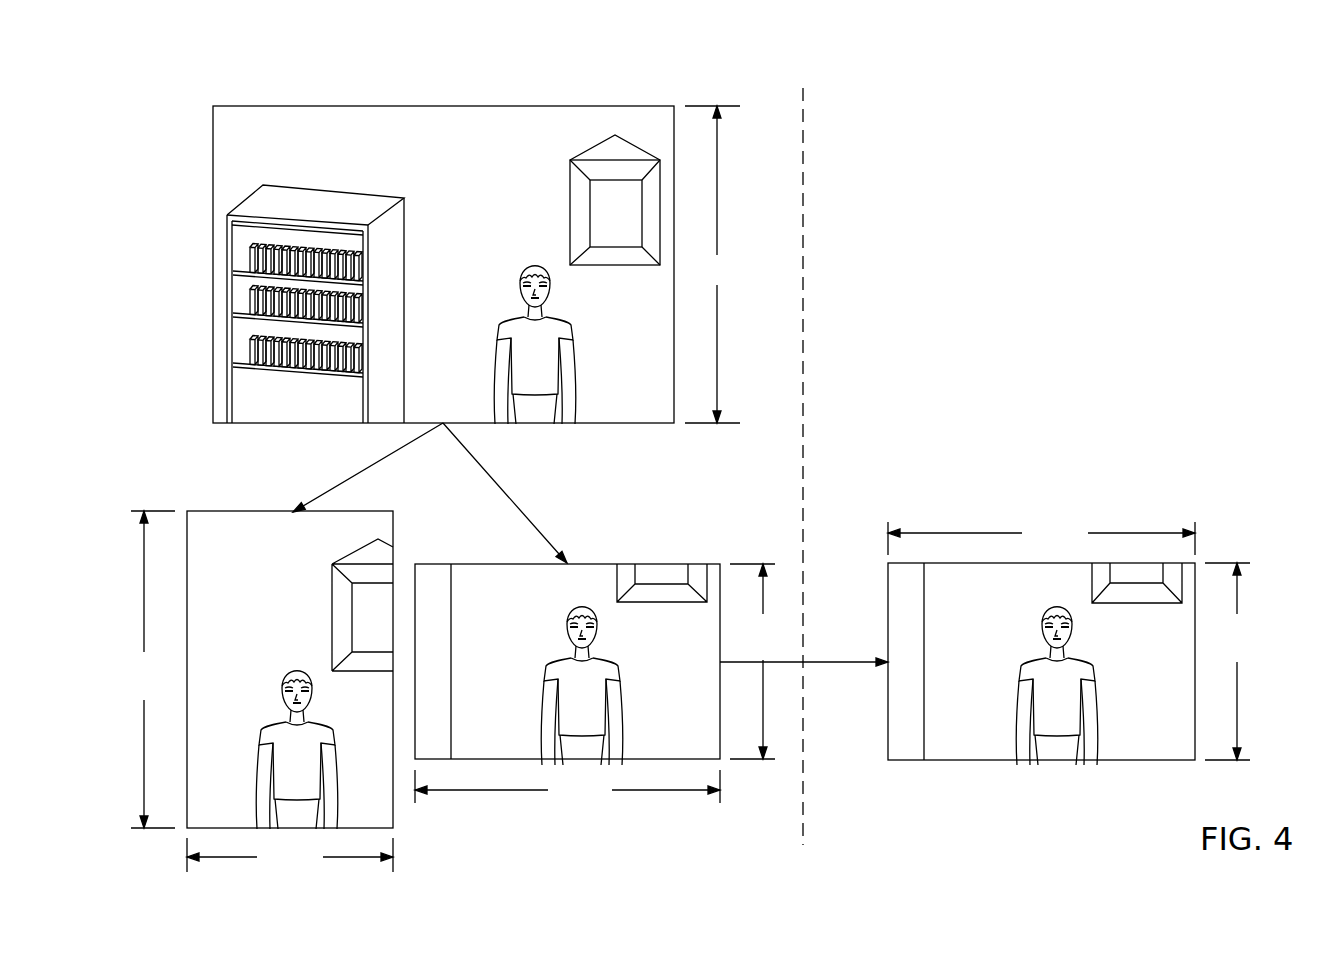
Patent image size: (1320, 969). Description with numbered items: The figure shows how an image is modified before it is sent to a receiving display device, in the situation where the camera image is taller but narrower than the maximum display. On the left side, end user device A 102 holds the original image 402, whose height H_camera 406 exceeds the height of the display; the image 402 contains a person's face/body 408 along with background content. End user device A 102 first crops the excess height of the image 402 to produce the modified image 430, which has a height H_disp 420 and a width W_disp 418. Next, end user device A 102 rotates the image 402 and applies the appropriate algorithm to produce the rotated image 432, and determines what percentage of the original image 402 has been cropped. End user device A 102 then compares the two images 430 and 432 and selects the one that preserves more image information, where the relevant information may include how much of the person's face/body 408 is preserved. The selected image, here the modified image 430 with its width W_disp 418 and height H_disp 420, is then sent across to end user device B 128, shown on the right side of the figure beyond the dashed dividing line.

The end user device A 102 is at (601, 82).
The end user device B 128 is at (960, 82).
The image 402 is at (213, 158).
The height H_camera 406 is at (433, 467).
The person's face/body 408 is at (520, 273).
The width W_disp 418 is at (805, 662).
The height H_disp 420 is at (720, 717).
The modified image 430 is at (597, 564).
The rotated image 432 is at (234, 511).